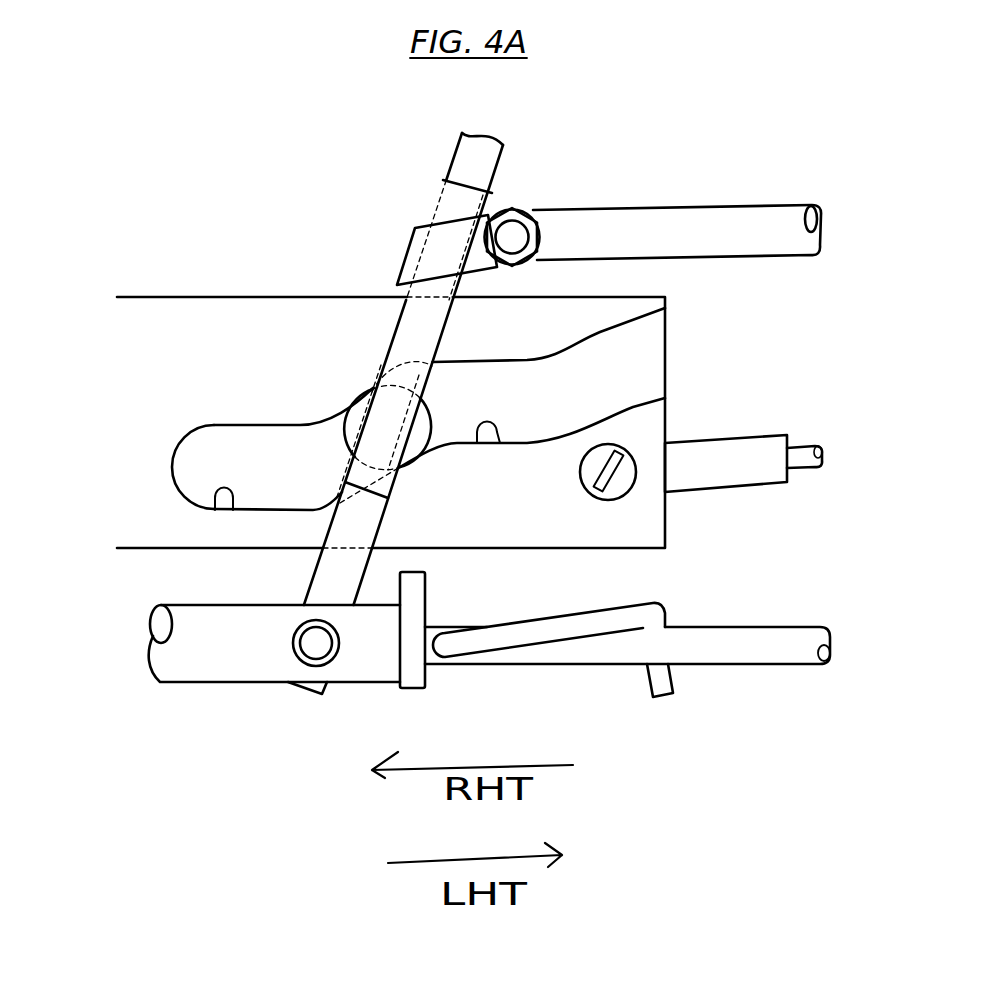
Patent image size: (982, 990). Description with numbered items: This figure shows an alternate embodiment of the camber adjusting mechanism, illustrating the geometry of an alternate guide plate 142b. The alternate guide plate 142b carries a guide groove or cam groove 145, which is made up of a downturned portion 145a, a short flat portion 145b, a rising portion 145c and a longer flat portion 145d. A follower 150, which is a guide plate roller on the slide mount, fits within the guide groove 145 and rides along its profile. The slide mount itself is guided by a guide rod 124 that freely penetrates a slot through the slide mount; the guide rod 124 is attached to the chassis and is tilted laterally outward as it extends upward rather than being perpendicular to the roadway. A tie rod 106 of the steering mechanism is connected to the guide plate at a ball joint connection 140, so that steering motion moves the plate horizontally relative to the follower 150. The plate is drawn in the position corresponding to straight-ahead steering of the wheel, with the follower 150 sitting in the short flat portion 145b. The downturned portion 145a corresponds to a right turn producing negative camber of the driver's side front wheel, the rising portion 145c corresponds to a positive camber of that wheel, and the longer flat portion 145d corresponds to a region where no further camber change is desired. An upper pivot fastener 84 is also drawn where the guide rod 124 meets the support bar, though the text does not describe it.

The pivot nut and support bar 84 is at (520, 208).
The tie rod 106 is at (748, 435).
The guide rod 124 is at (317, 568).
The ball joint connection 140 is at (630, 493).
The alternate guide plate 142b is at (243, 295).
The guide groove 145 is at (266, 452).
The downturned portion 145a is at (390, 350).
The short flat portion 145b is at (498, 433).
The rising portion 145c is at (637, 402).
The longer flat portion 145d is at (215, 502).
The follower 150 is at (357, 410).